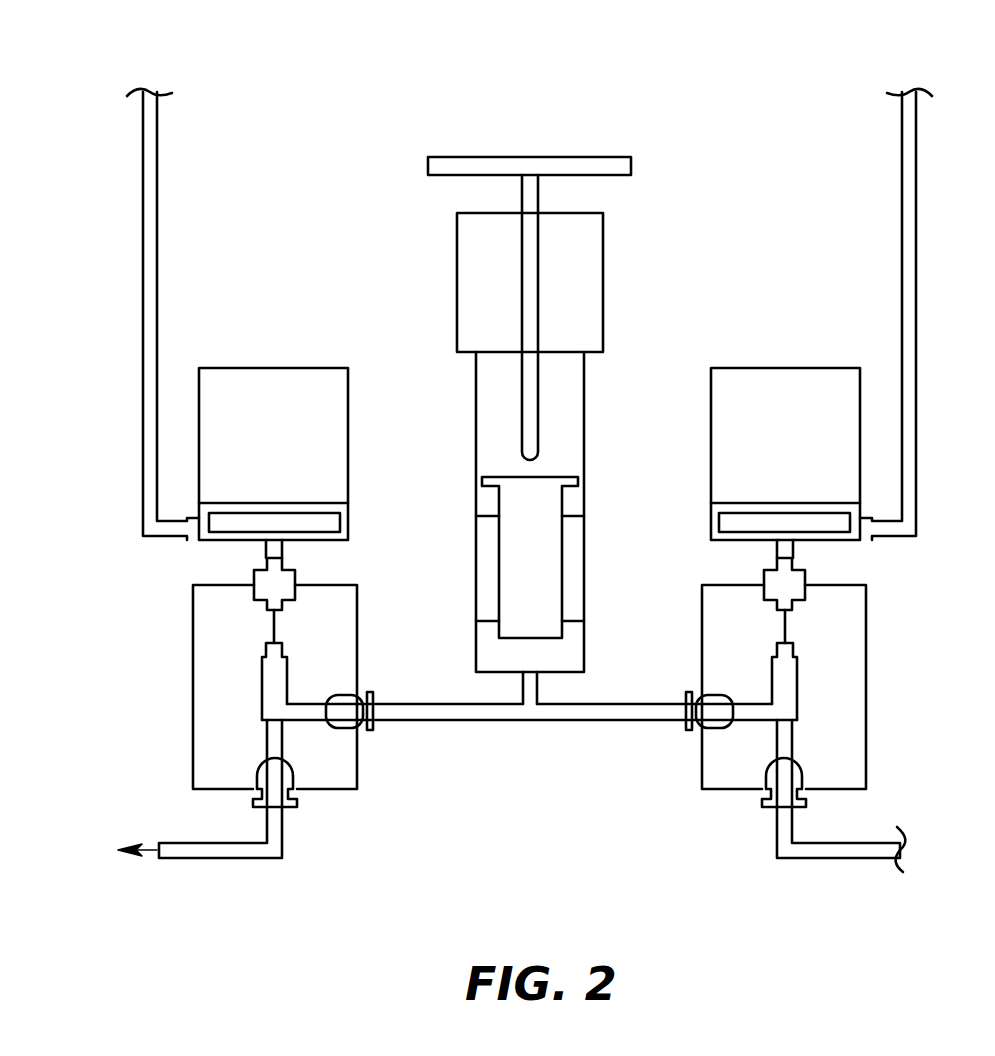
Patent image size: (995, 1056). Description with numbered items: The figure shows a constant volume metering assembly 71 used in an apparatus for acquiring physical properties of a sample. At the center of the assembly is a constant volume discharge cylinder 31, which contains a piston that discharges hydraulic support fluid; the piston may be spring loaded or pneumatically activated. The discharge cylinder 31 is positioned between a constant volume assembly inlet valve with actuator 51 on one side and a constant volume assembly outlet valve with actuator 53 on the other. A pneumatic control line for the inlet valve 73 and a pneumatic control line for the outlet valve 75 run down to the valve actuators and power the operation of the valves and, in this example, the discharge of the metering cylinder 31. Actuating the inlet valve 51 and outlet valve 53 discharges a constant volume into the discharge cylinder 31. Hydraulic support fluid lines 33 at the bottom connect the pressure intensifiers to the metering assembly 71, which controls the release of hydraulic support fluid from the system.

The constant volume metering assembly 71 is at (838, 57).
The constant volume discharge cylinder 31 is at (533, 157).
The hydraulic support fluid lines 33 is at (220, 860).
The constant volume assembly inlet valve with actuator 51 is at (866, 688).
The constant volume assembly outlet valve with actuator 53 is at (193, 688).
The pneumatic control line for the inlet valve 73 is at (917, 313).
The pneumatic control line for the outlet valve 75 is at (142, 310).